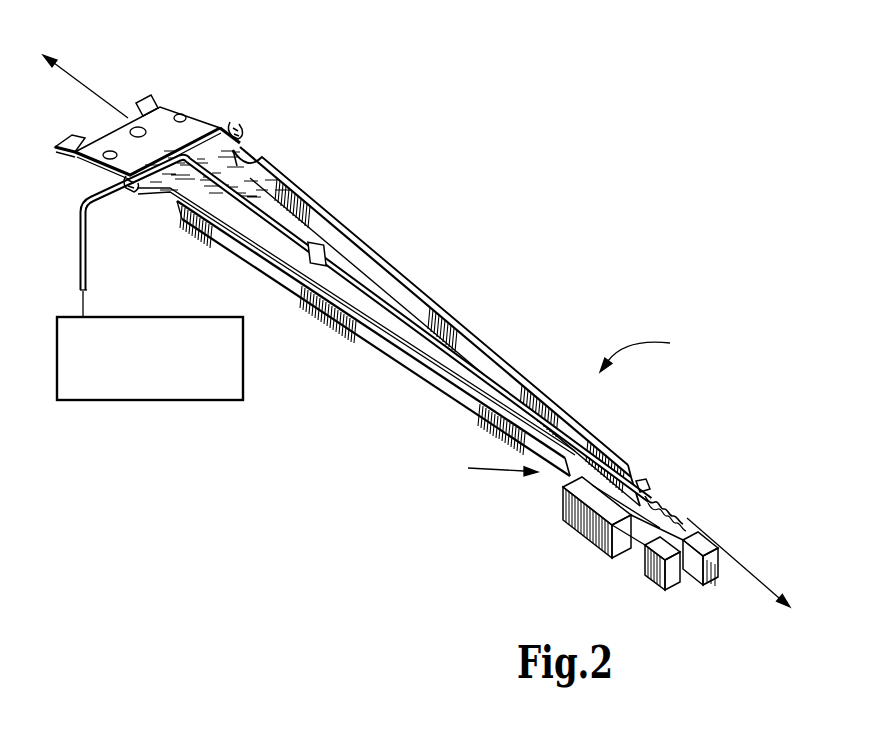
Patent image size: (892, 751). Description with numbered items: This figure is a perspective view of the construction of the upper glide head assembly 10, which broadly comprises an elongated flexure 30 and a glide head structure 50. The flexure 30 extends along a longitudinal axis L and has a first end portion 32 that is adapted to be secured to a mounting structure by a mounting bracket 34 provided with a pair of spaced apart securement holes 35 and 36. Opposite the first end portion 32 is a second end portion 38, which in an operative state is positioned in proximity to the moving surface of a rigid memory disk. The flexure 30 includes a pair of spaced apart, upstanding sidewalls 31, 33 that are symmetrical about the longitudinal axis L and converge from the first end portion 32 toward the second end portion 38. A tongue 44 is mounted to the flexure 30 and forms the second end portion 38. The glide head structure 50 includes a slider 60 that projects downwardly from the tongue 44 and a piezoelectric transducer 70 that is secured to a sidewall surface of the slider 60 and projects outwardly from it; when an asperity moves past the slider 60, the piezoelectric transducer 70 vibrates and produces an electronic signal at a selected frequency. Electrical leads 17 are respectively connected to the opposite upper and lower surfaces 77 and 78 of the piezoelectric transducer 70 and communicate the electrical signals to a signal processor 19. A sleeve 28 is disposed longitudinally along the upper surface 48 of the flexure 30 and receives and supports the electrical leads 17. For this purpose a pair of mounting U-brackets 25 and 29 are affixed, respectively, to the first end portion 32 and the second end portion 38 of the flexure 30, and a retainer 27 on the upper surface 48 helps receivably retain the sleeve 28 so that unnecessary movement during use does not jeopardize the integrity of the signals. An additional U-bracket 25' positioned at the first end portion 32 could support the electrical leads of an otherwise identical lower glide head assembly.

The upper glide head assembly 10 is at (649, 350).
The electrical leads 17 is at (665, 523).
The signal processor 19 is at (103, 390).
The mounting U-bracket 25 is at (145, 222).
The U-bracket 25' is at (288, 93).
The retainer 27 is at (318, 258).
The sleeve 28 is at (427, 333).
The mounting U-bracket 29 is at (640, 483).
The flexure 30 is at (365, 328).
The sidewall 31 is at (356, 332).
The first end portion 32 is at (436, 313).
The sidewall 33 is at (422, 292).
The mounting bracket 34 is at (112, 138).
The securement hole 35 is at (88, 157).
The securement hole 36 is at (182, 117).
The second end portion 38 is at (485, 468).
The tongue 44 is at (618, 542).
The upper surface 48 is at (242, 237).
The glide head structure 50 is at (629, 523).
The slider 60 is at (578, 517).
The piezoelectric transducer 70 is at (653, 563).
The upper surface 77 is at (697, 525).
The lower surface 78 is at (700, 575).
The longitudinal axis L is at (749, 573).